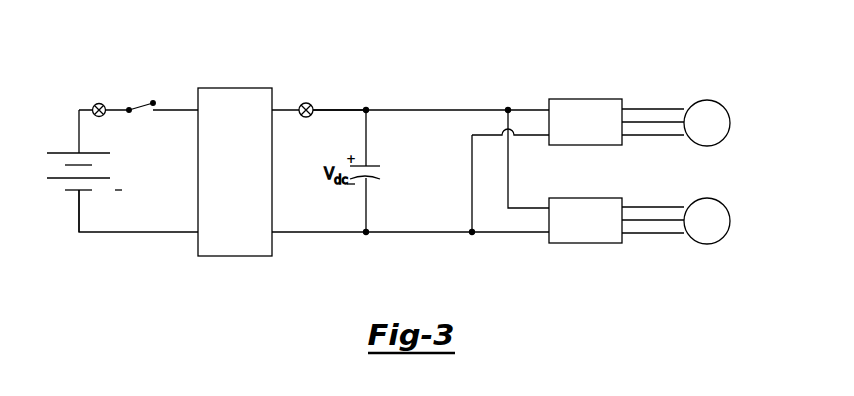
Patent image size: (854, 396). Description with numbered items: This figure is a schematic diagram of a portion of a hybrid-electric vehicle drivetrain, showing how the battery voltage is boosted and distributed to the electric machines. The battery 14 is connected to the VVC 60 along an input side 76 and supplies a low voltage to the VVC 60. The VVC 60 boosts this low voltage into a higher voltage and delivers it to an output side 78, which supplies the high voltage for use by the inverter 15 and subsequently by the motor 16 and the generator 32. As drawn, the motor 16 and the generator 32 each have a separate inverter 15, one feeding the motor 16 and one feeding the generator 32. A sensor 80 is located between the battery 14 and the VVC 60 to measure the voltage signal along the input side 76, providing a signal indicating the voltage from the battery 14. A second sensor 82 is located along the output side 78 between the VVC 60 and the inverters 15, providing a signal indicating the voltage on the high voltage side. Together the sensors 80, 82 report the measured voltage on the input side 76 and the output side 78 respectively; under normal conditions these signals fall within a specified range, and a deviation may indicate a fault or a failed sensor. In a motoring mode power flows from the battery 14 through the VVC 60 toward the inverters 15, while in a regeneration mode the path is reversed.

The battery 14 is at (77, 152).
The input side 76 is at (79, 216).
The sensor 80 is at (99, 103).
The VVC 60 is at (237, 88).
The second sensor 82 is at (306, 103).
The output side 78 is at (341, 110).
The inverter 15 is at (588, 99).
The motor 16 is at (708, 100).
The generator 32 is at (708, 244).